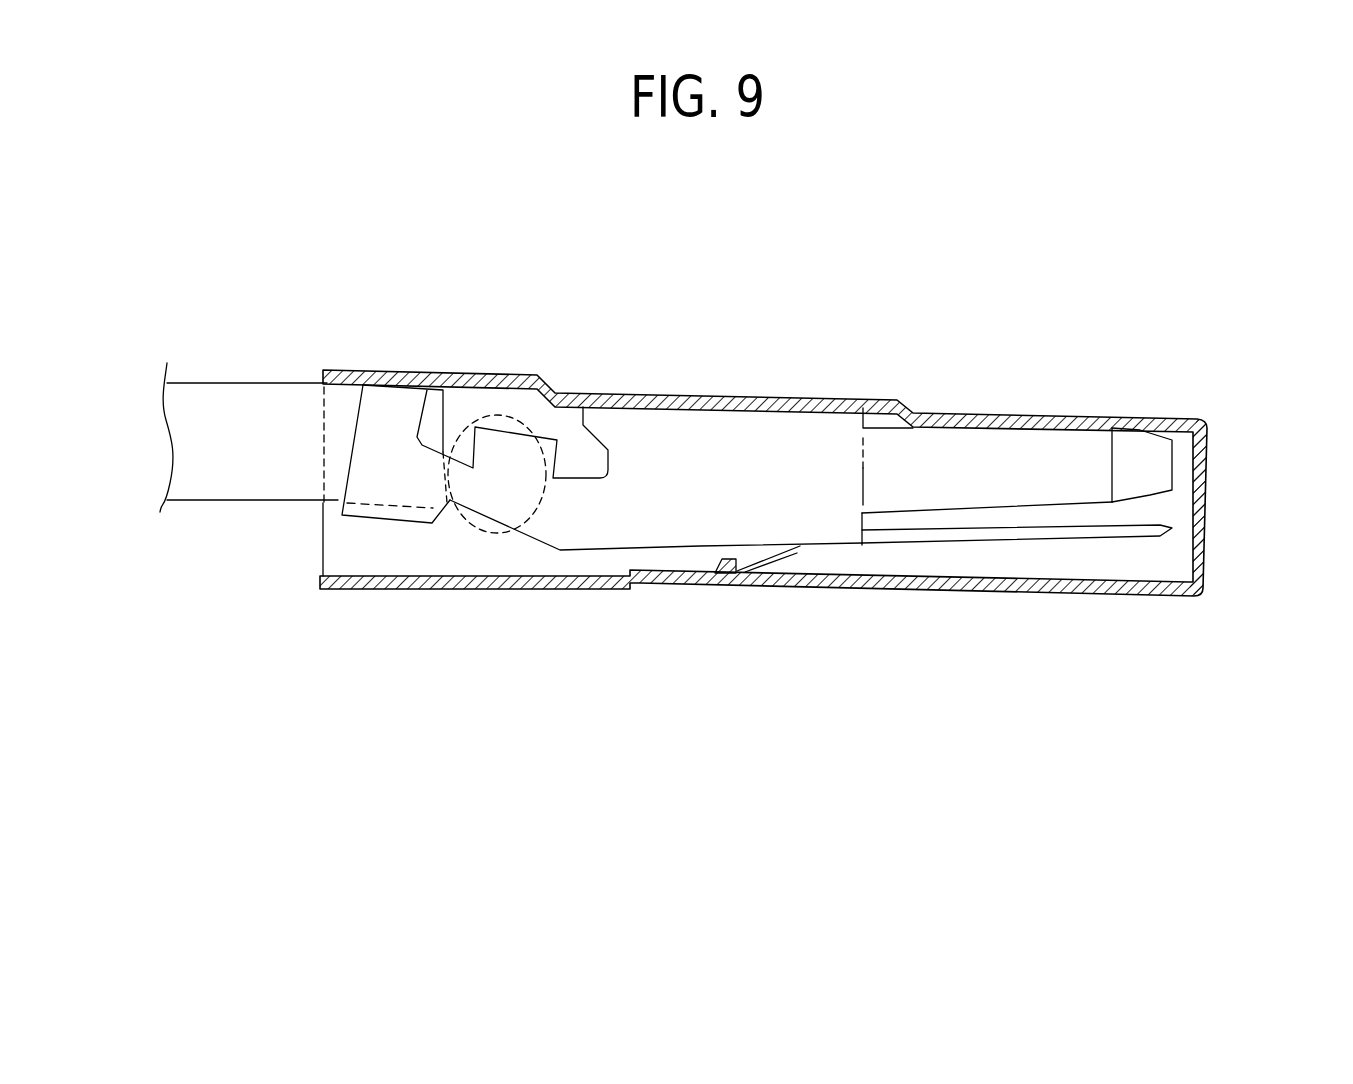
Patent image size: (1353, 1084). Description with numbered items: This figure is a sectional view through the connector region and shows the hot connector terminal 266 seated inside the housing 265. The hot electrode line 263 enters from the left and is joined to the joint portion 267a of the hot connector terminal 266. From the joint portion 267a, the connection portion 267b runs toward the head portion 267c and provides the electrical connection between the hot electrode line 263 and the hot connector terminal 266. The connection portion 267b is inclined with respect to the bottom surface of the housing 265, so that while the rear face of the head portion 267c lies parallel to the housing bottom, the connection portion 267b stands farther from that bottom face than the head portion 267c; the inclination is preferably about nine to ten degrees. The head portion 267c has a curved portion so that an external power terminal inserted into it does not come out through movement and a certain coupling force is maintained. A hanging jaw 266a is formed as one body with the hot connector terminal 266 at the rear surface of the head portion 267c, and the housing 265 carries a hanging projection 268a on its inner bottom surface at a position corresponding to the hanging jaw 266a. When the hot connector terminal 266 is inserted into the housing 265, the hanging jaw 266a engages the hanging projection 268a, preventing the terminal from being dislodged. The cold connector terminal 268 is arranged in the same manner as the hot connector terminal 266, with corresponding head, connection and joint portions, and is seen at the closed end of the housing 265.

The hot electrode line 263 is at (228, 487).
The housing 265 is at (1055, 352).
The hot connector terminal 266 is at (1033, 487).
The hanging jaw 266a is at (765, 550).
The joint portion 267a is at (378, 530).
The connection portion 267b is at (497, 548).
The head portion 267c is at (842, 553).
The cold connector terminal 268 is at (1207, 448).
The hanging projection 268a is at (710, 573).